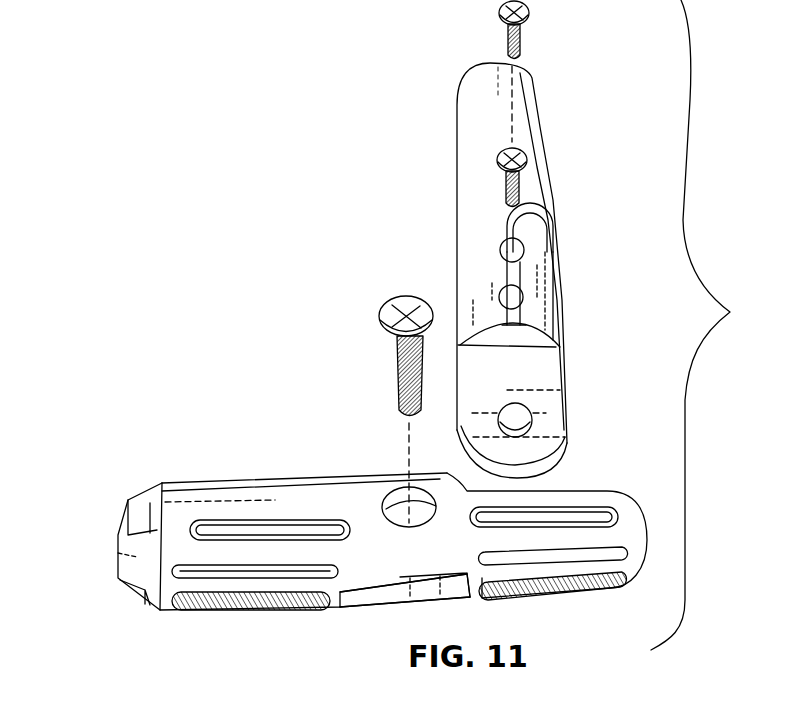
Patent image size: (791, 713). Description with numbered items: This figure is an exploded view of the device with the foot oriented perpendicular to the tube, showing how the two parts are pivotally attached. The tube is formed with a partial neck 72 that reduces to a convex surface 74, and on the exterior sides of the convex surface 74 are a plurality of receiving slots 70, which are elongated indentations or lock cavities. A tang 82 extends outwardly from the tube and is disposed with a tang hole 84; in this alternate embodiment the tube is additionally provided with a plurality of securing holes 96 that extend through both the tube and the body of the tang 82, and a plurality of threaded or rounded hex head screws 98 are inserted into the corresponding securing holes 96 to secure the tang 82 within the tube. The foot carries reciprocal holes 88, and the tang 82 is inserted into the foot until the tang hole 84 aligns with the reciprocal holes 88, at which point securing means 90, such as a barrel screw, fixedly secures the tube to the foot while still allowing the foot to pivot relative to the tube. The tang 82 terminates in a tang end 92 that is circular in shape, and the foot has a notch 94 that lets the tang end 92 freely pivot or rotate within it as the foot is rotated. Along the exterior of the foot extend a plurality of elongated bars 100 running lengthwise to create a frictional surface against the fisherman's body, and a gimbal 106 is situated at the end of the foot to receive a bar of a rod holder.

The plurality of receiving slots 70 is at (553, 247).
The partial neck 72 is at (553, 217).
The convex surface 74 is at (540, 277).
The tang 82 is at (527, 377).
The tang hole 84 is at (530, 427).
The reciprocal holes 88 is at (393, 510).
The securing means 90 is at (378, 345).
The tang end 92 is at (523, 467).
The notch 94 is at (373, 590).
The plurality of securing holes 96 is at (497, 303).
The hex head screws 98 is at (500, 30).
The plurality of elongated bars 100 is at (295, 530).
The gimbal 106 is at (137, 555).